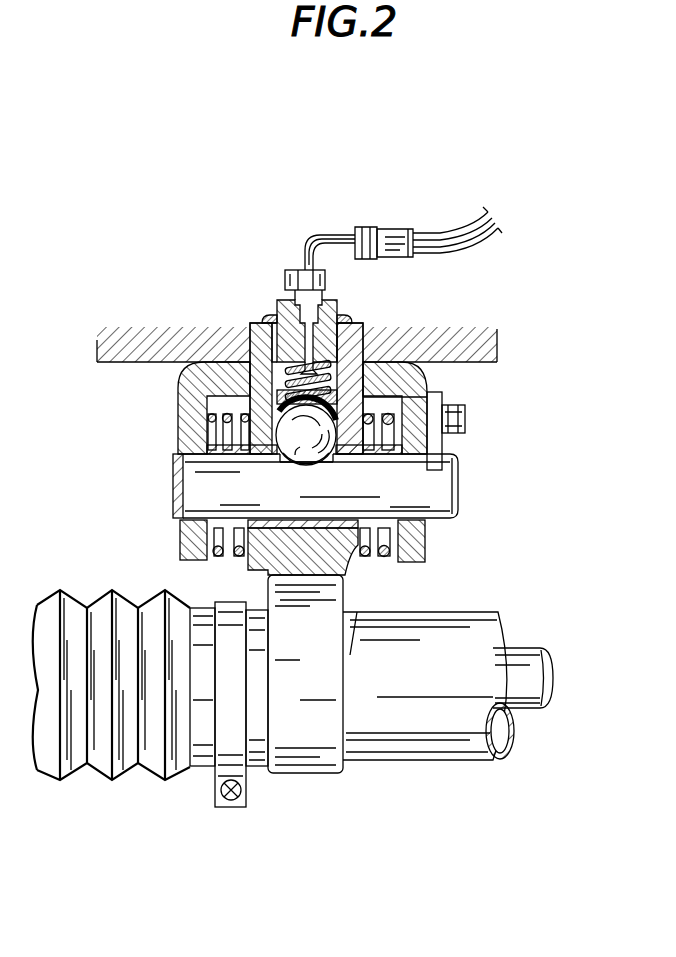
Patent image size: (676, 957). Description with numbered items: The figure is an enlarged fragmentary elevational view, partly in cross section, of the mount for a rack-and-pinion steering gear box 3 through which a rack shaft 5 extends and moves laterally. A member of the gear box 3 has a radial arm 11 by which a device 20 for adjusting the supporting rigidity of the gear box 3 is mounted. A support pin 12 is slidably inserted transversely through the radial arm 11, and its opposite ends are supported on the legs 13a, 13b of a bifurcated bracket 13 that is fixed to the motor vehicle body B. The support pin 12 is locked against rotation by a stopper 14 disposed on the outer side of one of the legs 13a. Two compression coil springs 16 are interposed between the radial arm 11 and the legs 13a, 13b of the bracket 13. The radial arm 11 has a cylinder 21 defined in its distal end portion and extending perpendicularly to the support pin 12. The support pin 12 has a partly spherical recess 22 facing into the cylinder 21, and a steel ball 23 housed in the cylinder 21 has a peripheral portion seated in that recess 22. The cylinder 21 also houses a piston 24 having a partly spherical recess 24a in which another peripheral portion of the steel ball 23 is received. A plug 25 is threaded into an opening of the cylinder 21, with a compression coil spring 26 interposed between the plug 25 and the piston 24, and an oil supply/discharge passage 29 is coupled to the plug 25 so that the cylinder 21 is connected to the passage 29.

The motor vehicle body B is at (143, 360).
The rack-and-pinion steering gear box 3 is at (422, 730).
The rack shaft 5 is at (533, 667).
The radial arm 11 is at (333, 558).
The support pin 12 is at (198, 486).
The bifurcated bracket 13 is at (166, 437).
The leg 13a is at (422, 535).
The leg 13b is at (190, 538).
The stopper 14 is at (437, 436).
The compression coil springs 16 is at (180, 403).
The supporting rigidity adjusting device 20 is at (264, 483).
The cylinder 21 is at (250, 360).
The partly spherical recess 22 is at (303, 462).
The steel ball 23 is at (331, 463).
The piston 24 is at (367, 400).
The partly spherical recess 24a is at (281, 452).
The plug 25 is at (283, 300).
The compression coil spring 26 is at (363, 360).
The oil supply/discharge passage 29 is at (451, 236).